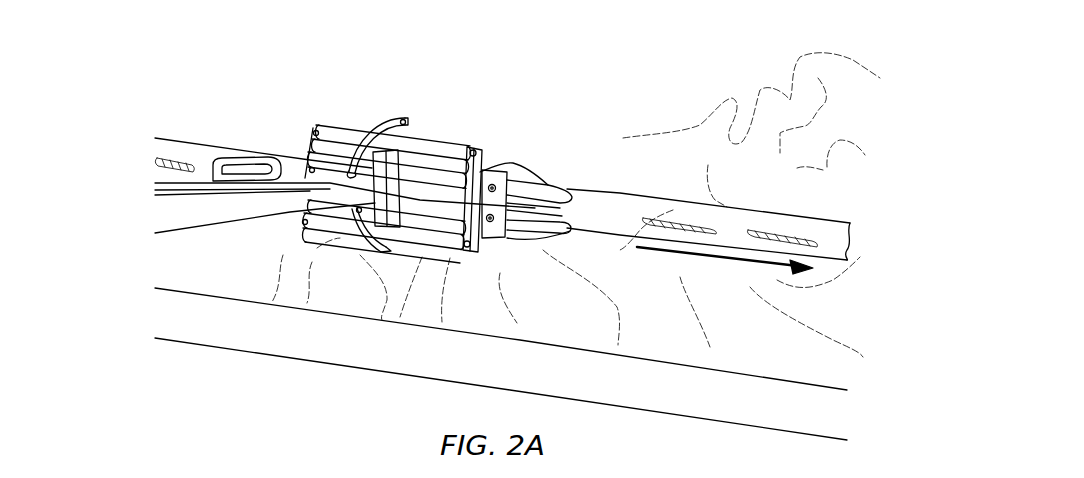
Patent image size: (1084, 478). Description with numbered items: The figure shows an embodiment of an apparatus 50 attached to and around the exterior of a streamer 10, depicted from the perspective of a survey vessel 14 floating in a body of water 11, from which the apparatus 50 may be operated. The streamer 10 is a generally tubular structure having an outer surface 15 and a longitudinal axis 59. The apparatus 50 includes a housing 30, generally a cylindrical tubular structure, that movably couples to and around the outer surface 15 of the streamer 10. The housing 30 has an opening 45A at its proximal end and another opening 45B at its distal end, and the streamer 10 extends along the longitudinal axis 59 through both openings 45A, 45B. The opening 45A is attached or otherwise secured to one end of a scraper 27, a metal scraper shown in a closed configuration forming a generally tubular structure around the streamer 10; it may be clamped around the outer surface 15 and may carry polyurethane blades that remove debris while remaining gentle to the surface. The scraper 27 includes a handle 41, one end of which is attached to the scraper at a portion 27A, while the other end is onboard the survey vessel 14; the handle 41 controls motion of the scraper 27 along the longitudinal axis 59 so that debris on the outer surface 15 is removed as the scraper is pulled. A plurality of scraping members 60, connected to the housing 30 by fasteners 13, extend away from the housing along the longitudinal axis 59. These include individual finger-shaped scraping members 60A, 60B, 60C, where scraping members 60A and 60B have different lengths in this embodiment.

The streamer 10 is at (845, 236).
The body of water 11 is at (821, 44).
The fasteners 13 is at (490, 225).
The survey vessel 14 is at (332, 366).
The outer surface 15 is at (736, 215).
The scraper 27 is at (337, 118).
The portion of scraper 27A is at (390, 115).
The housing 30 is at (508, 163).
The handle 41 is at (240, 220).
The opening 45A is at (481, 155).
The opening 45B is at (518, 165).
The apparatus 50 is at (451, 154).
The longitudinal axis 59 is at (667, 260).
The scraping members 60 is at (558, 206).
The individual scraping member 60A is at (560, 194).
The individual scraping member 60B is at (550, 232).
The individual scraping member 60C is at (563, 231).